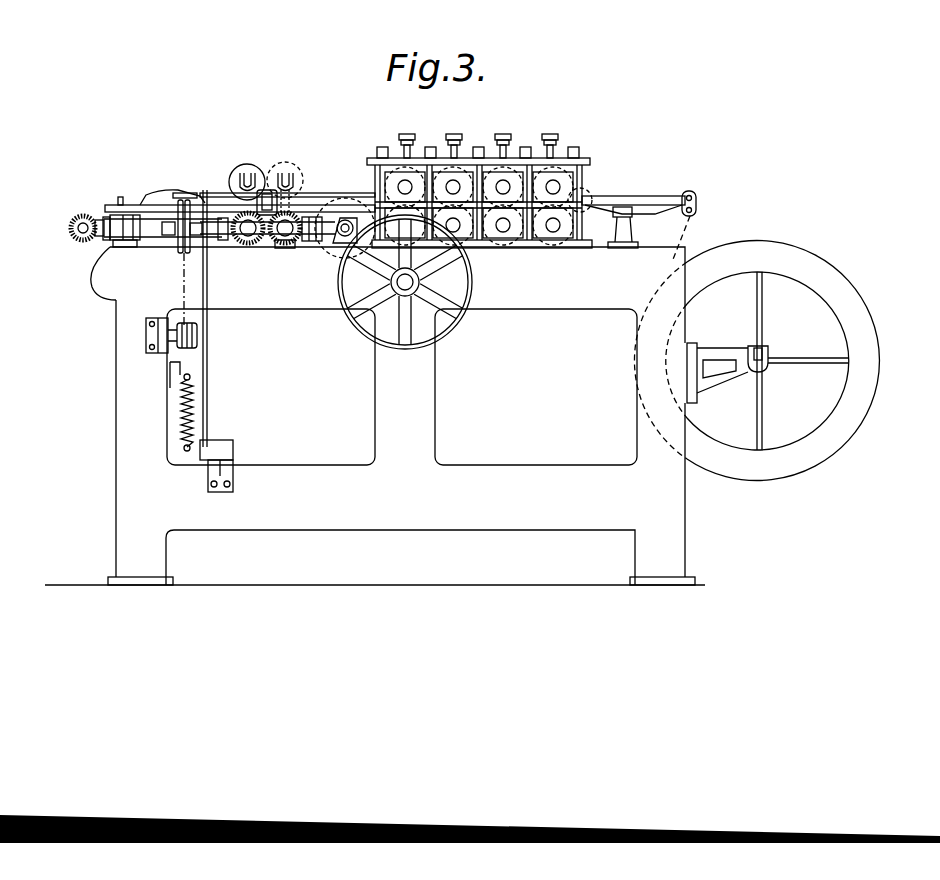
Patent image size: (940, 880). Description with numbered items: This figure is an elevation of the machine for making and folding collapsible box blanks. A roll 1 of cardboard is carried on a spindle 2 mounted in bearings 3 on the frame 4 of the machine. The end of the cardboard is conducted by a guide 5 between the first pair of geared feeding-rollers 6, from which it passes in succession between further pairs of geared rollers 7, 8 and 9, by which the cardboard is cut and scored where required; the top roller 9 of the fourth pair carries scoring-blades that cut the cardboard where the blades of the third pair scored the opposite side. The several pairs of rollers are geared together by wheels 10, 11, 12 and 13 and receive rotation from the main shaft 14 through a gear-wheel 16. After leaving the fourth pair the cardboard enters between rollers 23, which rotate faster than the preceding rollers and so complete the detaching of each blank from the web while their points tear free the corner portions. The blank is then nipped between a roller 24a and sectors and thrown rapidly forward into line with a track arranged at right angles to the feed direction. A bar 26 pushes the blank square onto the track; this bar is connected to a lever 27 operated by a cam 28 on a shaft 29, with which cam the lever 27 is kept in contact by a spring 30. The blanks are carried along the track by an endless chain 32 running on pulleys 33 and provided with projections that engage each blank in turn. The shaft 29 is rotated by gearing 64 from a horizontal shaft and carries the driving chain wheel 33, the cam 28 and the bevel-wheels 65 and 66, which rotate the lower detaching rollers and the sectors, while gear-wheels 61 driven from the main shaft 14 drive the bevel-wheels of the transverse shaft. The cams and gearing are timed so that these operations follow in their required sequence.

The roll of cardboard 1 is at (880, 356).
The spindle 2 is at (765, 372).
The bearings 3 is at (720, 378).
The frame 4 is at (375, 412).
The guide 5 is at (625, 205).
The feeding-roller 6 is at (582, 186).
The roller 7 is at (508, 172).
The roller 8 is at (450, 172).
The roller 9 is at (400, 172).
The gear-wheel 10 is at (556, 172).
The gear-wheel 11 is at (512, 248).
The gear-wheel 12 is at (470, 170).
The gear-wheel 13 is at (380, 197).
The main shaft 14 is at (415, 294).
The gear-wheel 16 is at (374, 336).
The roller 23 is at (292, 166).
The roller 24a is at (247, 164).
The bar 26 is at (168, 196).
The lever 27 is at (208, 340).
The cam 28 is at (208, 260).
The shaft 29 is at (150, 240).
The spring 30 is at (194, 412).
The endless chain 32 is at (182, 295).
The pulley 33 is at (182, 253).
The gear-wheel 61 is at (338, 190).
The gearing 64 is at (88, 216).
The bevel-wheel 65 is at (288, 244).
The bevel-wheel 66 is at (248, 244).